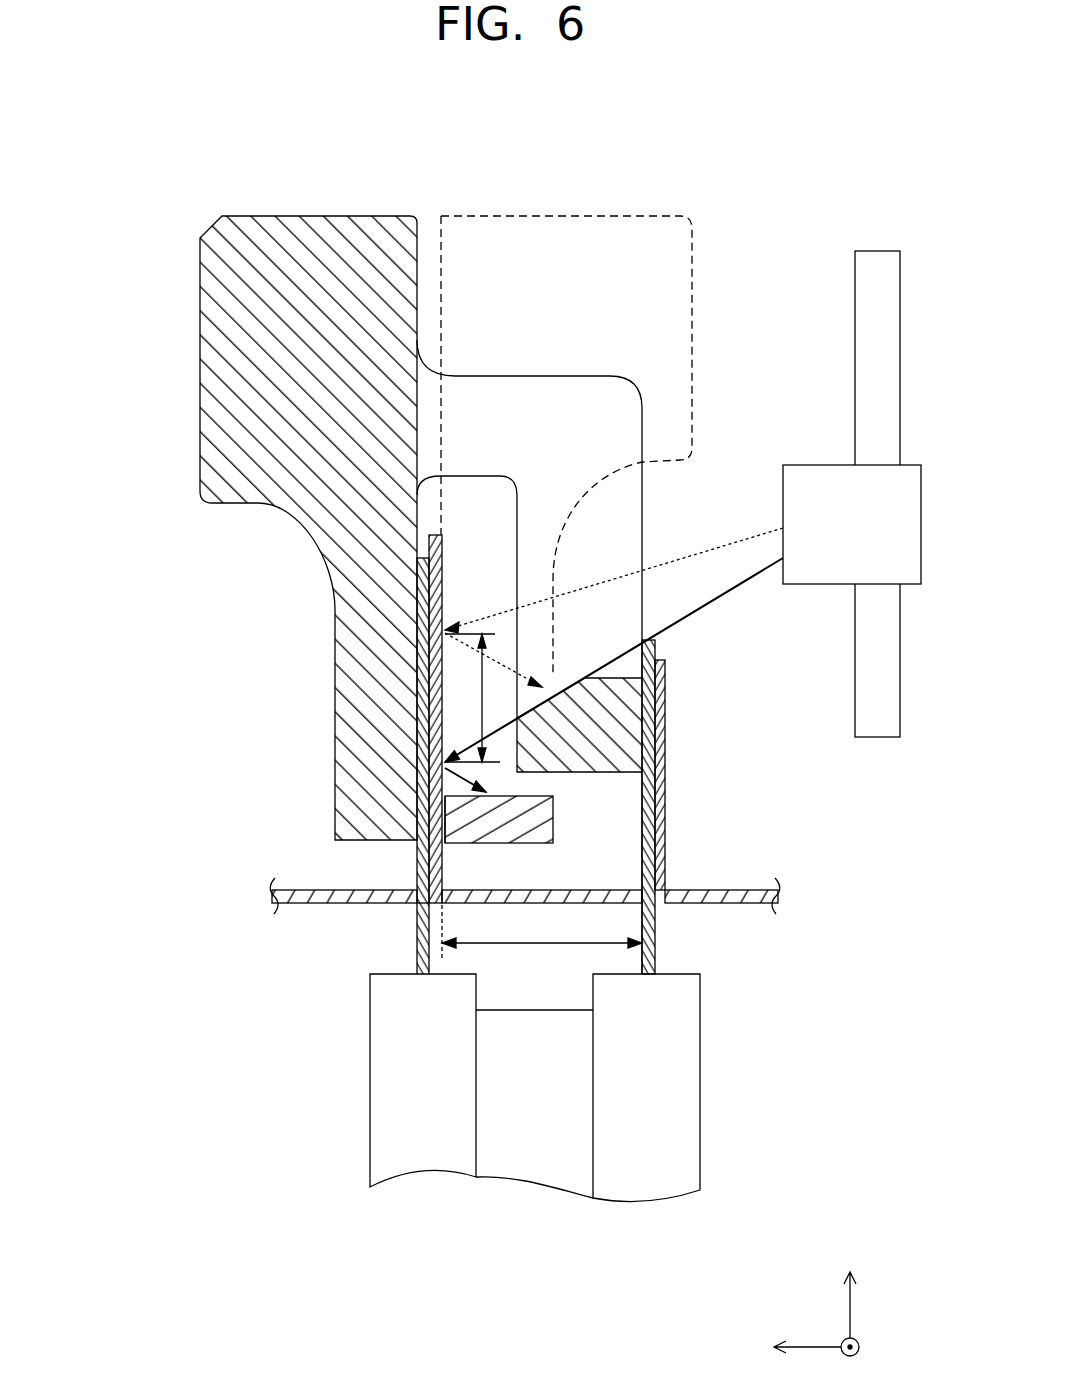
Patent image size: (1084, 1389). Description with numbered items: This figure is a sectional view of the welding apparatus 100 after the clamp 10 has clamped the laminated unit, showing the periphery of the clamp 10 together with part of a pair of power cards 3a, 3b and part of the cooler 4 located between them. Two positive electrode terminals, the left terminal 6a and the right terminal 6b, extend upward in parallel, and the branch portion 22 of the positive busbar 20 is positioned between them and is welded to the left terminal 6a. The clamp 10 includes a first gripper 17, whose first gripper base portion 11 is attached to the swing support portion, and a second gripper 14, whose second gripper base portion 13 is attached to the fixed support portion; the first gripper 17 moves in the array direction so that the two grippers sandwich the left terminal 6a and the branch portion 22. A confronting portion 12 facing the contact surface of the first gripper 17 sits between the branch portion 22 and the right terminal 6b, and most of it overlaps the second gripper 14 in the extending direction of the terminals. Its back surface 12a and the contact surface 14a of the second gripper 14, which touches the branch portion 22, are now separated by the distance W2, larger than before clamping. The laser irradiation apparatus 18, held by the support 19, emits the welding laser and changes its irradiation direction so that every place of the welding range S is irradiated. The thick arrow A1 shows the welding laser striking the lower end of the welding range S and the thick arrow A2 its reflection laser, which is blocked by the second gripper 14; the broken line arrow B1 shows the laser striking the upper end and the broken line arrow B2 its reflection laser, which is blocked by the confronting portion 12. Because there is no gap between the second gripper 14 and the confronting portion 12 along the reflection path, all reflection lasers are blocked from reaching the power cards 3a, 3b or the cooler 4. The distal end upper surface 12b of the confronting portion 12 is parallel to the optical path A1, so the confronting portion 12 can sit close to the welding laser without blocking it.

The welding apparatus 100 is at (185, 143).
The first gripper base portion 11 is at (213, 326).
The second gripper base portion 13 is at (697, 248).
The confronting portion 12 is at (601, 657).
The back surface 12a is at (665, 712).
The distal end upper surface 12b is at (550, 686).
The clamp 10 is at (524, 657).
The first gripper 17 is at (337, 664).
The branch portion 22 is at (417, 867).
The left terminal 6a is at (415, 930).
The right terminal 6b is at (648, 937).
The second gripper 14 is at (553, 830).
The contact surface 14a is at (438, 828).
The positive busbar 20 is at (753, 904).
The power card 3a is at (375, 1062).
The power card 3b is at (690, 1080).
The cooler 4 is at (507, 1173).
The support 19 is at (878, 251).
The laser irradiation apparatus 18 is at (838, 465).
The thick arrow A1 is at (727, 593).
The reflection laser A2 is at (445, 768).
The broken line arrow B1 is at (720, 546).
The reflection laser B2 is at (477, 655).
The welding range S is at (482, 694).
The distance W2 is at (542, 931).